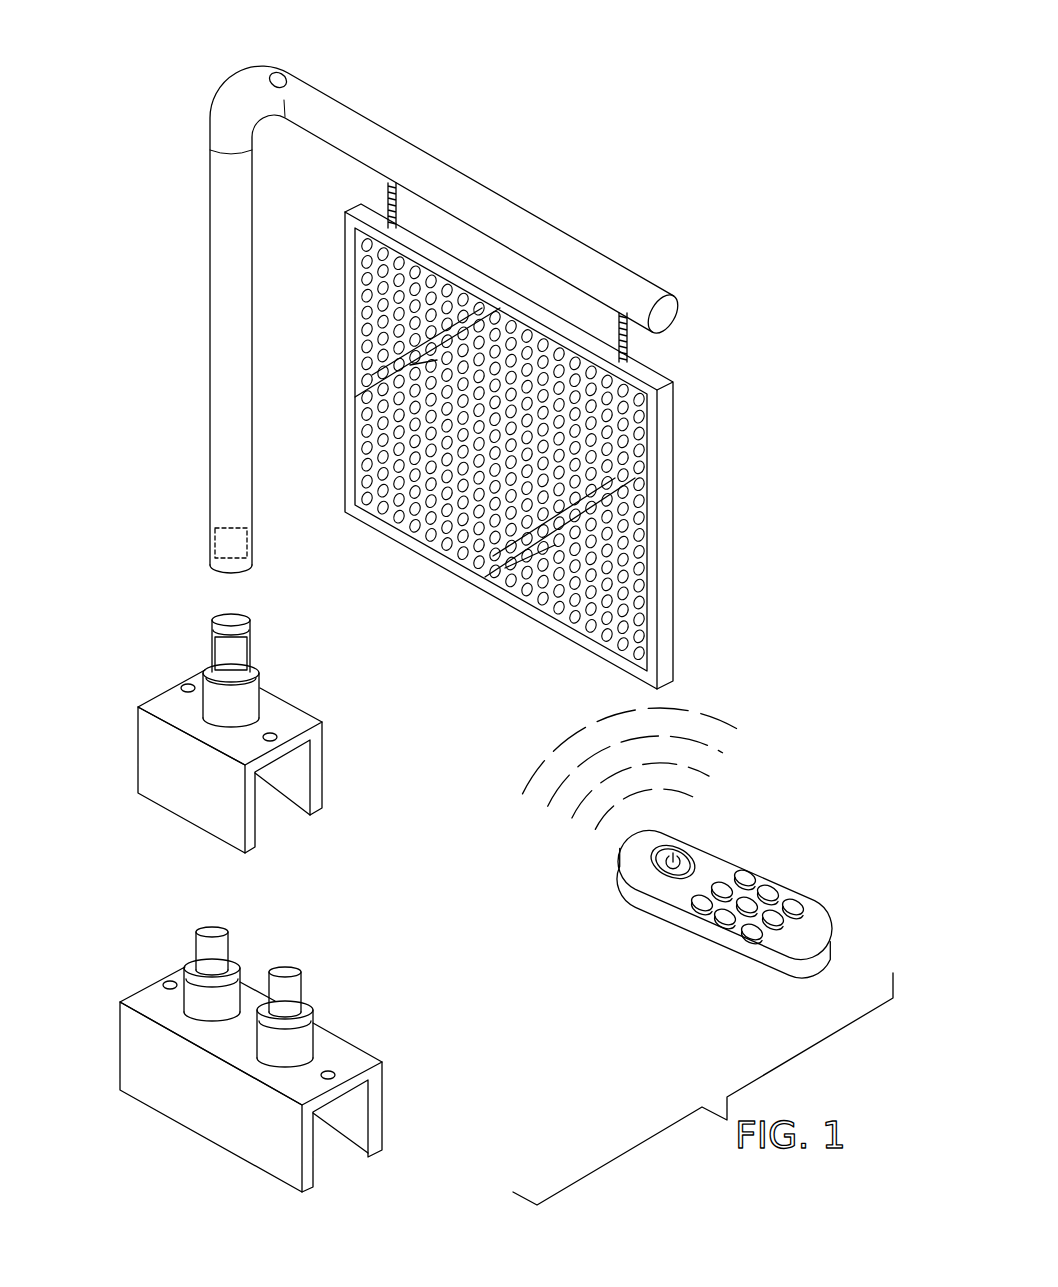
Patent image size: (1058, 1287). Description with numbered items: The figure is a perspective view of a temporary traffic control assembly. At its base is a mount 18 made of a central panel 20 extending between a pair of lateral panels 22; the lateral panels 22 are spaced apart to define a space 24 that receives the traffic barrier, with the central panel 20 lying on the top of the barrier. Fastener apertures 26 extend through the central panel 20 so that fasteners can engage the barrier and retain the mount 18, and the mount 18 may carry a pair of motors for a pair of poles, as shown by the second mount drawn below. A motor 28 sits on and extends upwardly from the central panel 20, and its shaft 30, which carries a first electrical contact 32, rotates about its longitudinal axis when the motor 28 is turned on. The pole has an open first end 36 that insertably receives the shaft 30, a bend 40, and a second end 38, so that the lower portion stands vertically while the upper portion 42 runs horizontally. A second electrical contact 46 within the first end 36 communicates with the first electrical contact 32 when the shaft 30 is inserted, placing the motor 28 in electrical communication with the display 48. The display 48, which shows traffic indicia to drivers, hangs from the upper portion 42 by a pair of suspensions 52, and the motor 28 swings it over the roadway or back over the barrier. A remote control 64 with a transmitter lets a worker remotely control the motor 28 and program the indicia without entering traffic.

The mount 18 is at (244, 730).
The central panel 20 is at (168, 695).
The lateral panels 22 is at (325, 755).
The space 24 is at (286, 825).
The fastener apertures 26 is at (190, 682).
The motor 28 is at (262, 673).
The shaft 30 is at (249, 630).
The first electrical contact 32 is at (236, 598).
The first end 36 is at (216, 574).
The second end 38 is at (677, 316).
The bend 40 is at (441, 289).
The upper portion 42 is at (199, 293).
The second electrical contact 46 is at (233, 528).
The display 48 is at (566, 388).
The suspensions 52 is at (398, 185).
The remote control 64 is at (800, 890).